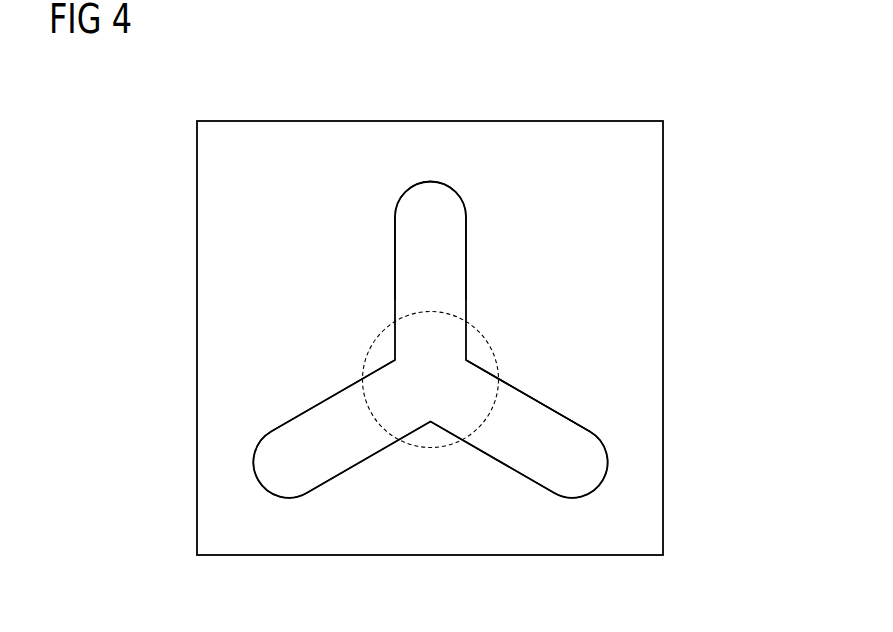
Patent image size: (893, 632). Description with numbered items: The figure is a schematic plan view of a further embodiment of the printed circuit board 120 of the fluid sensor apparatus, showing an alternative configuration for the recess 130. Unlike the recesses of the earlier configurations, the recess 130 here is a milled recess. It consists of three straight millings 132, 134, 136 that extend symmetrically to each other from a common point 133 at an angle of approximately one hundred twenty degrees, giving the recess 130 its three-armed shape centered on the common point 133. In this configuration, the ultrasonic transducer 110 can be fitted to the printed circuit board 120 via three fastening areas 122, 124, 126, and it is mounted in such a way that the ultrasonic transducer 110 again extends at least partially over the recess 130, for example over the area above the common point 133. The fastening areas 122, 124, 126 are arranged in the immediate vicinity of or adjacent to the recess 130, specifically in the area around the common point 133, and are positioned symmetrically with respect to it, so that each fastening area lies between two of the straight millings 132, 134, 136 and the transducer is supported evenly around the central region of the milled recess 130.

The ultrasonic transducer 110 is at (483, 333).
The printed circuit board 120 is at (253, 152).
The fastening area 122 is at (383, 353).
The fastening area 124 is at (478, 352).
The fastening area 126 is at (423, 433).
The recess 130 is at (498, 214).
The straight milling 132 is at (416, 224).
The common point 133 is at (430, 379).
The straight milling 134 is at (565, 437).
The straight milling 136 is at (300, 437).